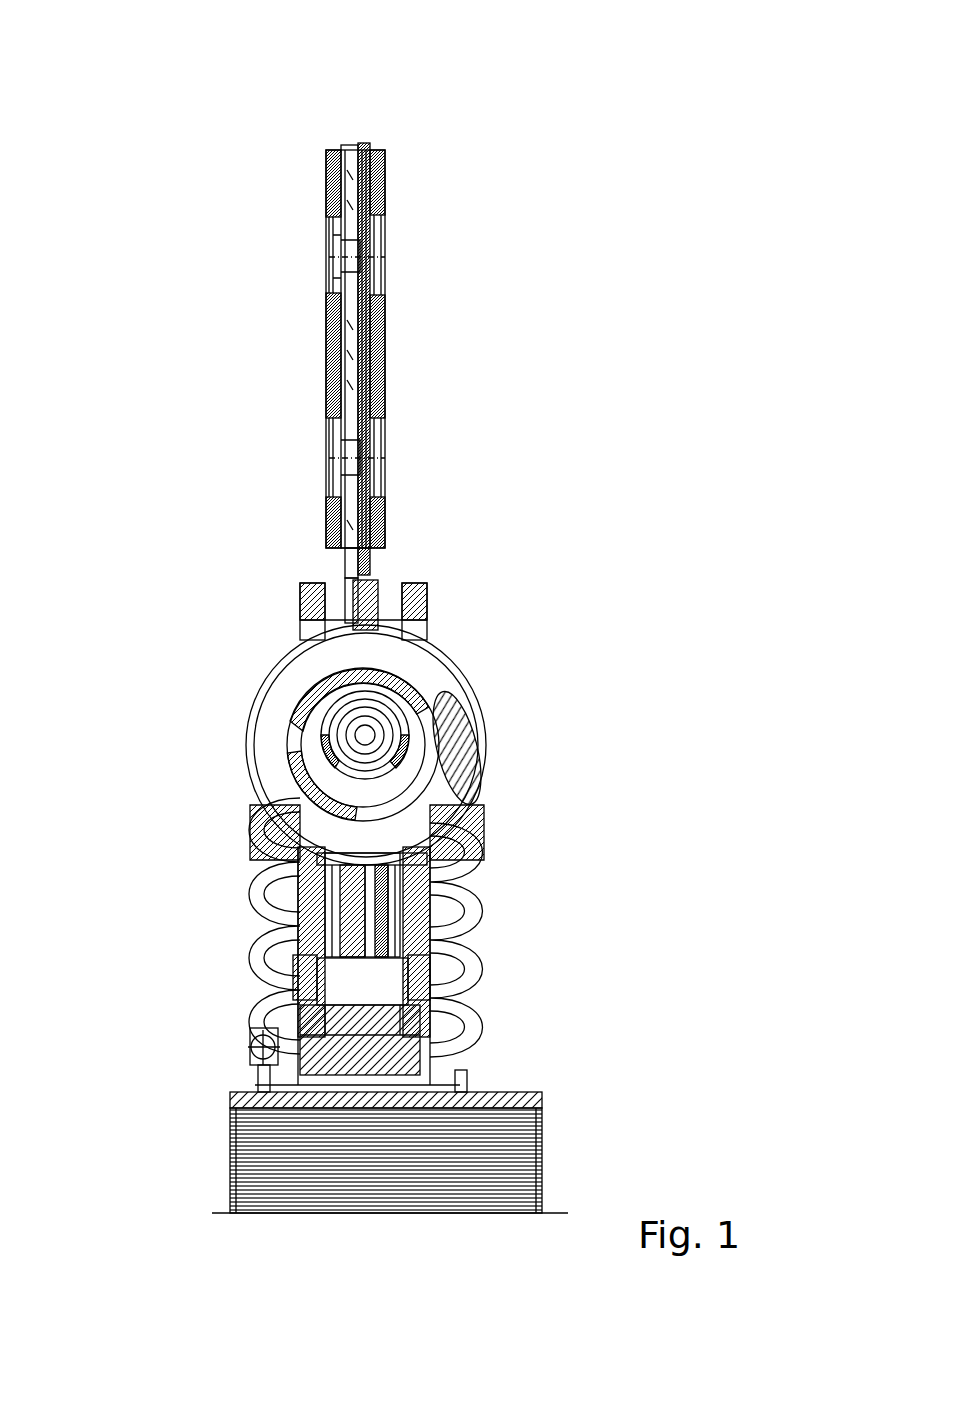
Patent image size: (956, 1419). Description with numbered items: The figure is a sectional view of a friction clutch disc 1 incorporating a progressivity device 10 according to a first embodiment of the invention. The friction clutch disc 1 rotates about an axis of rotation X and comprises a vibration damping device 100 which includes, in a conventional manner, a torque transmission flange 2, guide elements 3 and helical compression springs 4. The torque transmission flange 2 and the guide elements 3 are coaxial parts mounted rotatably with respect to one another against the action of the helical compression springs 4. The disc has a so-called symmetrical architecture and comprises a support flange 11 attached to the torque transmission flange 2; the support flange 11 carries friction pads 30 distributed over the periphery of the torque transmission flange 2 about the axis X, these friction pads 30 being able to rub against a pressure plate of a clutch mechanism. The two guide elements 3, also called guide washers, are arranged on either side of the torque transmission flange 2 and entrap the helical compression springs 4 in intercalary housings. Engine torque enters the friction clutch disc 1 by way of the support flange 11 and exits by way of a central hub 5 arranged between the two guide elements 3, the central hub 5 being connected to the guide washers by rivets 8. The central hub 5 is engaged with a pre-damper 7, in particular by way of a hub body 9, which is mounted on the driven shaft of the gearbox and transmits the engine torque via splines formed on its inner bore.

The friction clutch disc 1 is at (220, 150).
The progressivity device 10 is at (560, 352).
The friction pads 30 is at (326, 196).
The support flange 11 is at (346, 150).
The vibration damping device 100 is at (560, 570).
The torque transmission flange 2 is at (373, 578).
The helical compression springs 4 is at (472, 747).
The guide elements 3 is at (418, 930).
The rivets 8 is at (397, 990).
The central hub 5 is at (415, 1062).
The pre-damper 7 is at (250, 1048).
The hub body 9 is at (372, 1082).
The axis of rotation X is at (567, 1214).